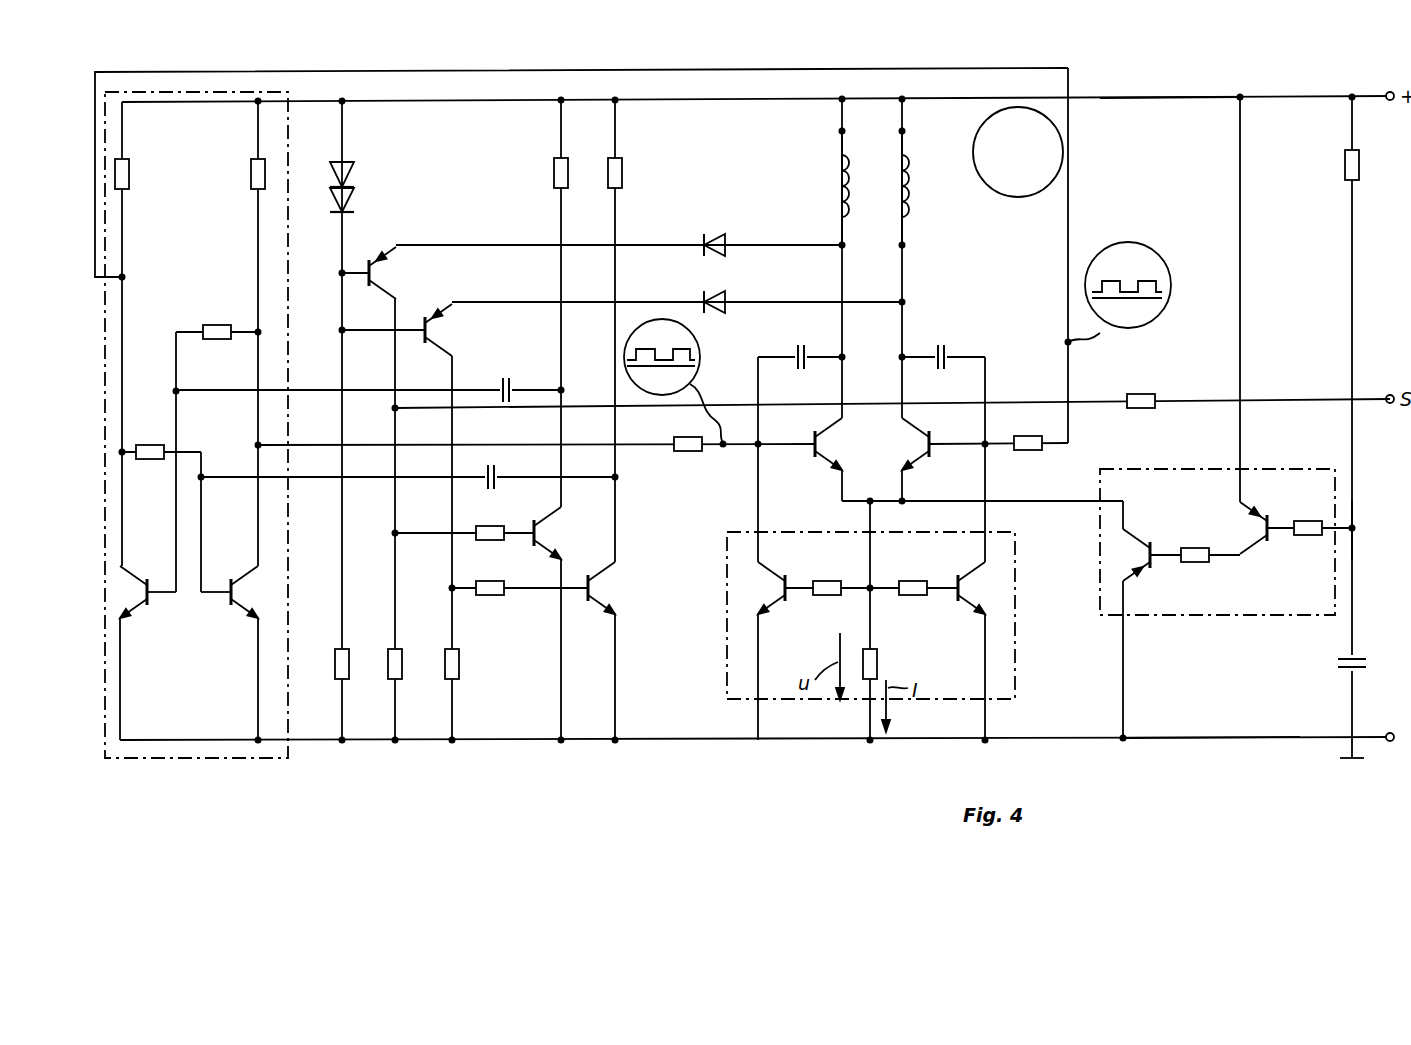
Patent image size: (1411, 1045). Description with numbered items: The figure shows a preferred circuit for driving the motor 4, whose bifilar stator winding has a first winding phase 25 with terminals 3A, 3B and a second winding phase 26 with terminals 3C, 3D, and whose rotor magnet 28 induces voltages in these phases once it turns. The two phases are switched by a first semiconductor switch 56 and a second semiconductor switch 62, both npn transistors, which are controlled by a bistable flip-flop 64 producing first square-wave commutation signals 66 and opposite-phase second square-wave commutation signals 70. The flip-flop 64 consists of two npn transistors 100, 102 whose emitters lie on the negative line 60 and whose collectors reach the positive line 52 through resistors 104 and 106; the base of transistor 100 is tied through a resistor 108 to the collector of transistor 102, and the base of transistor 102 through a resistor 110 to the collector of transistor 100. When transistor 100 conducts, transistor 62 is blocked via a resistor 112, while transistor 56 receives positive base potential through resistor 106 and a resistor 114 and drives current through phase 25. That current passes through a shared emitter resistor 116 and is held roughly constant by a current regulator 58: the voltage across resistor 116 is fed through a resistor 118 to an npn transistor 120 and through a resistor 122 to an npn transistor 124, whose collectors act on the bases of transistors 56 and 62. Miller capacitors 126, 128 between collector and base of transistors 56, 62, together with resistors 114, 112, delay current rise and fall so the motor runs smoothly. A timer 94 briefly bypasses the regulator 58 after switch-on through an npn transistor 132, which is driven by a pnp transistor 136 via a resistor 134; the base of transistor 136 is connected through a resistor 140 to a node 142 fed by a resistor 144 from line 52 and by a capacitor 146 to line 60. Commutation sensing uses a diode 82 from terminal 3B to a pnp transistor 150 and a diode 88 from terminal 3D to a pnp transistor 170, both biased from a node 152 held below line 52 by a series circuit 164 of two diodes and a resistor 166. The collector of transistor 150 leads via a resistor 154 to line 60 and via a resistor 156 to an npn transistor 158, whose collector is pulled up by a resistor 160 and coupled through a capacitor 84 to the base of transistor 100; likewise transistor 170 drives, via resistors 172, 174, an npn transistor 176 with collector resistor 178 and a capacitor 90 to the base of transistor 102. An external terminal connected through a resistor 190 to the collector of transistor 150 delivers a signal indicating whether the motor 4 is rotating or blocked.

The motor 4 is at (878, 152).
The terminal 3A is at (840, 131).
The terminal 3B is at (840, 246).
The terminal 3C is at (905, 131).
The terminal 3D is at (906, 244).
The first winding phase 25 is at (838, 185).
The second winding phase 26 is at (909, 186).
The rotor magnet 28 is at (1020, 198).
The positive line 52 is at (1156, 96).
The first semiconductor switch 56 is at (829, 450).
The current regulator 58 is at (1018, 556).
The negative line 60 is at (1180, 738).
The second semiconductor switch 62 is at (920, 432).
The bistable flip-flop 64 is at (196, 399).
The first square-wave commutation signals 66 is at (655, 349).
The second square-wave commutation signals 70 is at (1125, 282).
The diode 82 is at (710, 232).
The capacitor 84 is at (507, 378).
The diode 88 is at (712, 290).
The capacitor 90 is at (498, 470).
The timer 94 is at (1165, 469).
The npn transistor 100 is at (138, 608).
The npn transistor 102 is at (235, 608).
The resistor 104 is at (129, 176).
The resistor 106 is at (251, 176).
The resistor 108 is at (214, 325).
The resistor 110 is at (148, 446).
The resistor 112 is at (1029, 452).
The resistor 114 is at (689, 452).
The shared emitter resistor 116 is at (878, 652).
The resistor 118 is at (823, 581).
The npn transistor 120 is at (780, 606).
The resistor 122 is at (906, 581).
The npn transistor 124 is at (965, 606).
The Miller capacitor 126 is at (800, 344).
The Miller capacitor 128 is at (947, 344).
The npn transistor 132 is at (1147, 578).
The resistor 134 is at (1200, 566).
The pnp transistor 136 is at (1245, 515).
The resistor 140 is at (1305, 520).
The node 142 is at (1354, 526).
The resistor 144 is at (1346, 170).
The capacitor 146 is at (1338, 664).
The pnp transistor 150 is at (388, 268).
The node 152 is at (341, 276).
The resistor 154 is at (392, 646).
The resistor 156 is at (505, 526).
The npn transistor 158 is at (553, 532).
The resistor 160 is at (556, 182).
The series circuit of two diodes 164 is at (422, 186).
The resistor 166 is at (333, 646).
The pnp transistor 170 is at (462, 318).
The resistor 172 is at (447, 646).
The resistor 174 is at (503, 582).
The npn transistor 176 is at (605, 584).
The resistor 178 is at (622, 174).
The resistor 190 is at (1146, 393).